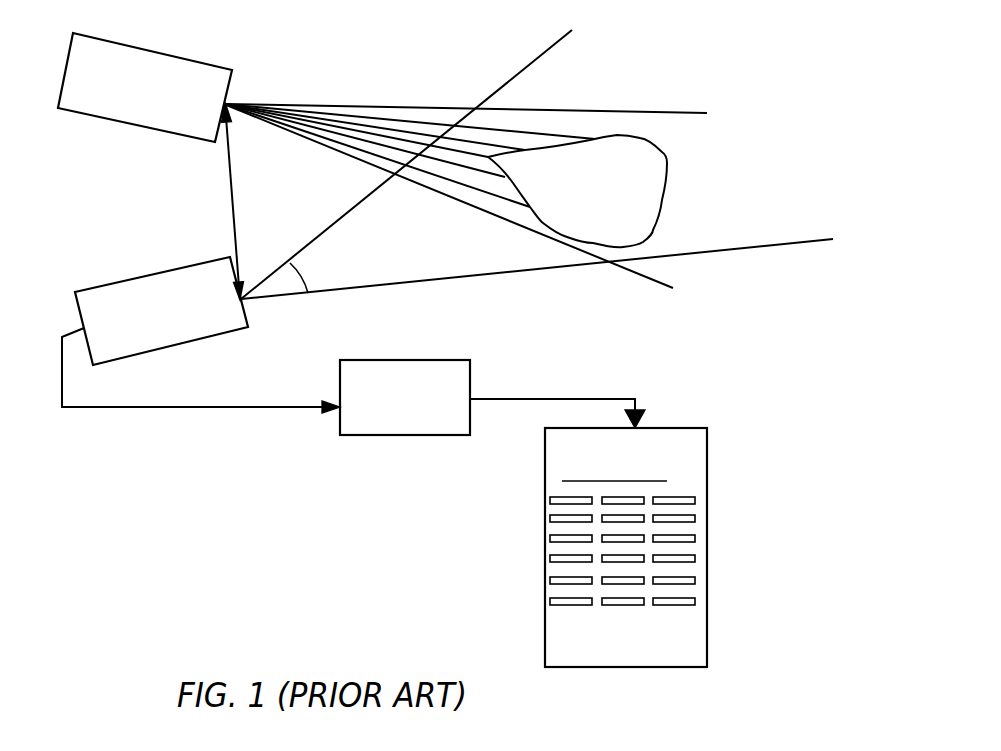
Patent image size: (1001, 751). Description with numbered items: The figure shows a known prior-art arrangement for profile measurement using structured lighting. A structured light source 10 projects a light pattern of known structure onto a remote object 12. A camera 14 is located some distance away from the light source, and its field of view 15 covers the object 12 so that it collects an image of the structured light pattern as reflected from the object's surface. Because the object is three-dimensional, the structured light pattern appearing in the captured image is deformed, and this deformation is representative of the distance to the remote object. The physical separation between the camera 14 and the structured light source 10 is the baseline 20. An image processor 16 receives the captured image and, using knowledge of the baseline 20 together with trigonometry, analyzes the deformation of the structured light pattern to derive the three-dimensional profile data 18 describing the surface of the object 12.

The structured light source 10 is at (138, 125).
The object 12 is at (663, 202).
The camera 14 is at (137, 279).
The field of view 15 is at (308, 270).
The image processor 16 is at (422, 360).
The 3D profile data 18 is at (708, 460).
The baseline 20 is at (232, 200).